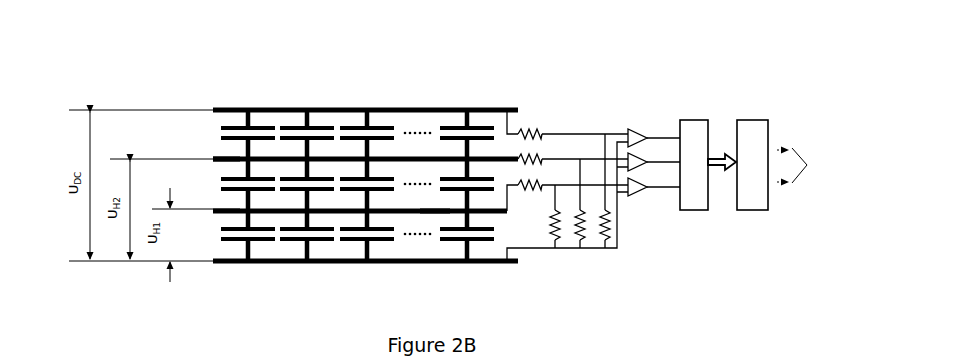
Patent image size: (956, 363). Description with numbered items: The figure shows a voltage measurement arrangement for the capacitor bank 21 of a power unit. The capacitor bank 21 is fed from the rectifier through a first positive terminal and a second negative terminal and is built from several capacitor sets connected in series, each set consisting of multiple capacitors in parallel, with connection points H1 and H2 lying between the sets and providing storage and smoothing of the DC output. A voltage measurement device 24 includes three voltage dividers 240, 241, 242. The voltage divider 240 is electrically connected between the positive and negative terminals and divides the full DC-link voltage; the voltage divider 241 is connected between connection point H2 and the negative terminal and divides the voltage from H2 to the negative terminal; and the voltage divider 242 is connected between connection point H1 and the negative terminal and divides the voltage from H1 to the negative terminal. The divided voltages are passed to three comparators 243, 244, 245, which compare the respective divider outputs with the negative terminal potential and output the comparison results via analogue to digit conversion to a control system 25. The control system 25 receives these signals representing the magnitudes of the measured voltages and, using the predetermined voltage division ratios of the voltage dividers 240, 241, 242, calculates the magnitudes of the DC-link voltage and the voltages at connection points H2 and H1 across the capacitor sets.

The capacitor bank 21 is at (343, 110).
The voltage measurement device 24 is at (607, 176).
The voltage divider 240 is at (600, 215).
The voltage divider 241 is at (575, 212).
The voltage divider 242 is at (533, 188).
The comparator 243 is at (625, 130).
The comparator 244 is at (638, 153).
The comparator 245 is at (645, 193).
The control system 25 is at (752, 165).
The connection point H2 is at (240, 159).
The connection point H1 is at (433, 217).